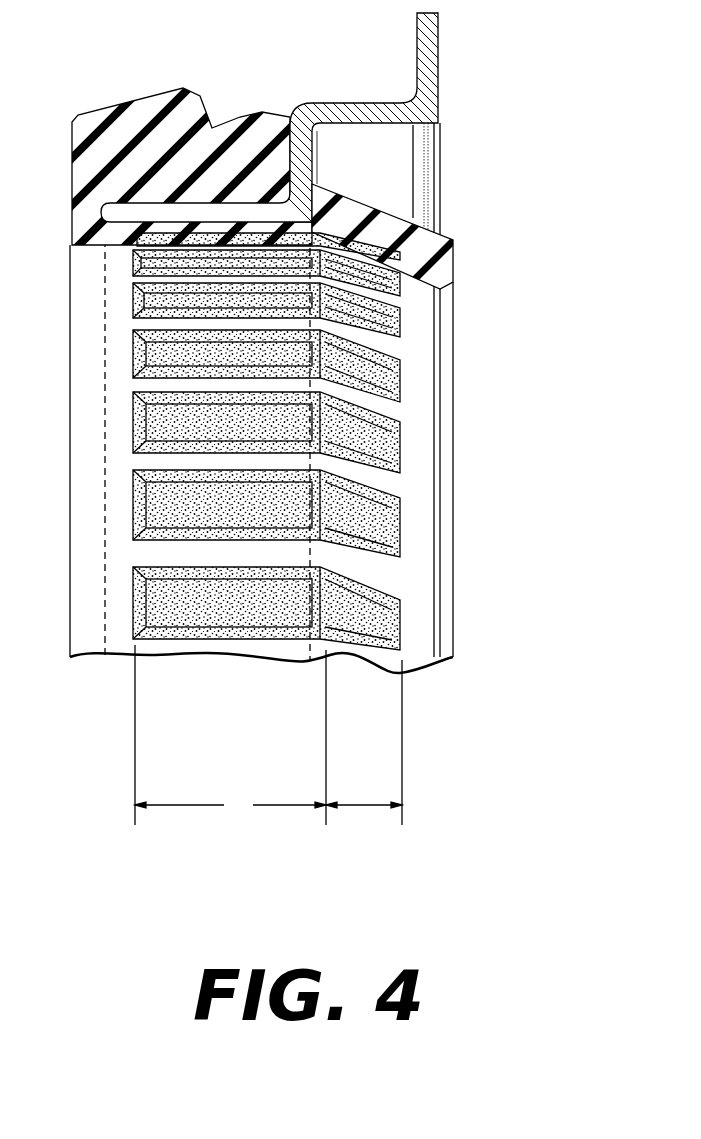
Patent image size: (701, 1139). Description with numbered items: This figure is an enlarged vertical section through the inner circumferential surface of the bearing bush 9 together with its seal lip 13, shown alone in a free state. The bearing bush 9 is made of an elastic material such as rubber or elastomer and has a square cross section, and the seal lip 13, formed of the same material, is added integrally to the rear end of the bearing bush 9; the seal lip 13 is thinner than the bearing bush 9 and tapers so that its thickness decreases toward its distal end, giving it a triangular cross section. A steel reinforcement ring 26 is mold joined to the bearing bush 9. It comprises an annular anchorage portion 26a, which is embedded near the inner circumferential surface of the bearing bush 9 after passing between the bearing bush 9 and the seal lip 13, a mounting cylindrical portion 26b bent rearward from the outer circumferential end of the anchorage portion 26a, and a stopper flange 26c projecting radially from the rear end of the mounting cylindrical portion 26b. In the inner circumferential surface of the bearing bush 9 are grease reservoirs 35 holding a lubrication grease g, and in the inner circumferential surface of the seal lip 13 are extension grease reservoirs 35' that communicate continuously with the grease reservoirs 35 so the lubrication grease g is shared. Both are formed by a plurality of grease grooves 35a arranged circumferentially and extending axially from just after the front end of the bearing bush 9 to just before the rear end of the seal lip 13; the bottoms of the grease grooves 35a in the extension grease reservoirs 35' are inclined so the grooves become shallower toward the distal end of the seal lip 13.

The bearing bush 9 is at (116, 140).
The reinforcement ring 26 is at (368, 98).
The annular anchorage portion 26a is at (201, 213).
The mounting cylindrical portion 26b is at (377, 120).
The stopper flange 26c is at (432, 53).
The seal lip 13 is at (418, 243).
The grease grooves 35a is at (158, 338).
The lubrication grease g is at (262, 254).
The grease reservoirs 35 is at (230, 735).
The extension grease reservoirs 35' is at (380, 768).